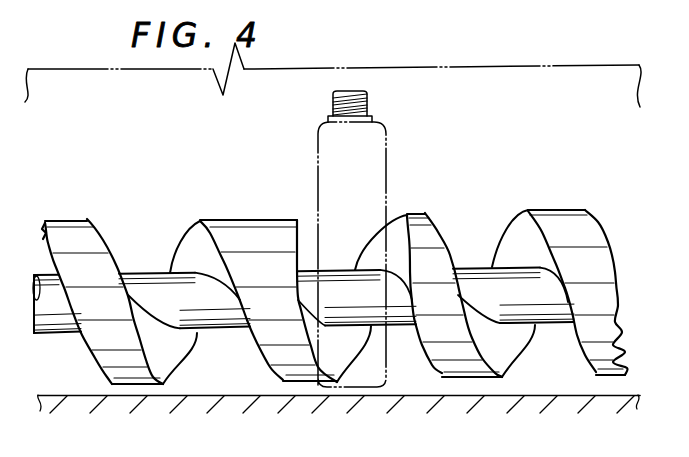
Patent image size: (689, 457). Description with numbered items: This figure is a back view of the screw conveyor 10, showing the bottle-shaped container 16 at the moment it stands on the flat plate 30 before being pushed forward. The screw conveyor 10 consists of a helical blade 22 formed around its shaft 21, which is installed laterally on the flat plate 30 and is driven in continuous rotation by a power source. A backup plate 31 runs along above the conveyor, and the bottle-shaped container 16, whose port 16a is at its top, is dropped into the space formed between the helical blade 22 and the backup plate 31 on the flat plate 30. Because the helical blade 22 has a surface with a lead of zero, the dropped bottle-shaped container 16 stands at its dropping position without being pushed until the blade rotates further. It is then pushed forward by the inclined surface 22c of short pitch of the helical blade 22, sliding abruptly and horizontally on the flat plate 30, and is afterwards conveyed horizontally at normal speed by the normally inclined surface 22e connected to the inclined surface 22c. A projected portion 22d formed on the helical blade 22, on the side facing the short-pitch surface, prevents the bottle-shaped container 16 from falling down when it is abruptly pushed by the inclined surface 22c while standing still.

The screw conveyor 10 is at (333, 306).
The bottle-shaped container 16 is at (343, 239).
The port of bottle-shaped container 16a is at (333, 99).
The shaft 21 is at (553, 325).
The helical blade 22 is at (338, 306).
The inclined surface of short pitch 22c is at (388, 230).
The projected portion 22d is at (245, 217).
The normally inclined surface 22e is at (349, 353).
The flat plate 30 is at (496, 396).
The backup plate 31 is at (511, 76).